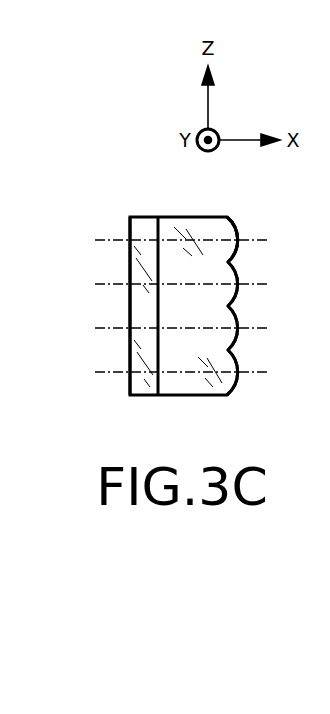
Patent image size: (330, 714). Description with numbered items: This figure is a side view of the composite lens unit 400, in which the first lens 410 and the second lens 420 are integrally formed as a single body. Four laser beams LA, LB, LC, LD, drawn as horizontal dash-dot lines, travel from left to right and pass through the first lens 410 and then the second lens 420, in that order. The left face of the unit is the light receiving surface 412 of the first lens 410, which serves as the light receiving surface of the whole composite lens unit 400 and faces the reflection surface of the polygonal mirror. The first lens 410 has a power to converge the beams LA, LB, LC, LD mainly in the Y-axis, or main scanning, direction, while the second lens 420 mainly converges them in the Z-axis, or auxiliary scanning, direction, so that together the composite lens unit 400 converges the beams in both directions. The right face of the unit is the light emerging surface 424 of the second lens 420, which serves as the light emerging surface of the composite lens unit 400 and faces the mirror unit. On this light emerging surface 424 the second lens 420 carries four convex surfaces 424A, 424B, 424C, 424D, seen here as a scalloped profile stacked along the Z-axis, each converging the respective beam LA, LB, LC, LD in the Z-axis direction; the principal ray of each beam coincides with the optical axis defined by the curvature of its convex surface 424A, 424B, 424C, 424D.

The composite lens unit 400 is at (158, 178).
The first lens 410 is at (138, 206).
The second lens 420 is at (195, 206).
The light receiving surface 412 is at (130, 382).
The light emerging surface 424 is at (235, 223).
The convex surface 424A is at (238, 379).
The convex surface 424B is at (238, 338).
The convex surface 424C is at (238, 292).
The convex surface 424D is at (238, 248).
The beam LD is at (110, 240).
The beam LC is at (110, 284).
The beam LB is at (110, 328).
The beam LA is at (110, 372).